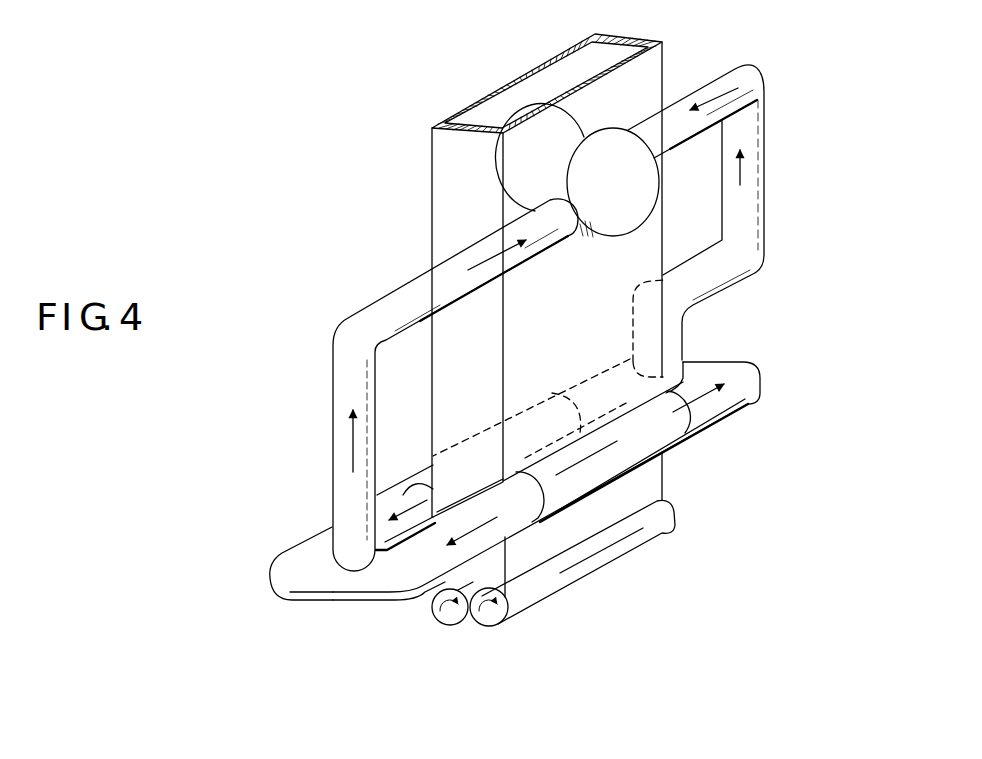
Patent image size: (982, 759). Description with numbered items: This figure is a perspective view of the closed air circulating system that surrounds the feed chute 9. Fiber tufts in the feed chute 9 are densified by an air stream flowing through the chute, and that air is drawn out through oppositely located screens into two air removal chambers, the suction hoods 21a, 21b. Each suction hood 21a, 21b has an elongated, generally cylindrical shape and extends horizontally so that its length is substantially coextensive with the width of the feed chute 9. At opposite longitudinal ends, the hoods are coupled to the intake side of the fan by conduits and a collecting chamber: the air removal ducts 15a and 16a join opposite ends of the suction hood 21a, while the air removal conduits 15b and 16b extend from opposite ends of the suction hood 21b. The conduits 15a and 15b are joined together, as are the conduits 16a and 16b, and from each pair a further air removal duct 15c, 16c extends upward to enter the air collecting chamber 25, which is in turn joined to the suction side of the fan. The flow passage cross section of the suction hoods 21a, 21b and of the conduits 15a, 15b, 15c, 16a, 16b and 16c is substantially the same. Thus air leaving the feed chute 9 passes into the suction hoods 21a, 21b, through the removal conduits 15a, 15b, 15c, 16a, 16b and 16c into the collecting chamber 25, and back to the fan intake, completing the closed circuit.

The feed chute 9 is at (460, 171).
The air collecting chamber 25 is at (603, 165).
The air removal duct 15a is at (400, 575).
The air removal conduit 15b is at (291, 572).
The further air removal duct 15c is at (350, 335).
The air removal duct 16a is at (581, 380).
The air removal conduit 16b is at (738, 384).
The further air removal duct 16c is at (748, 208).
The suction hood 21a is at (403, 493).
The suction hood 21b is at (615, 458).